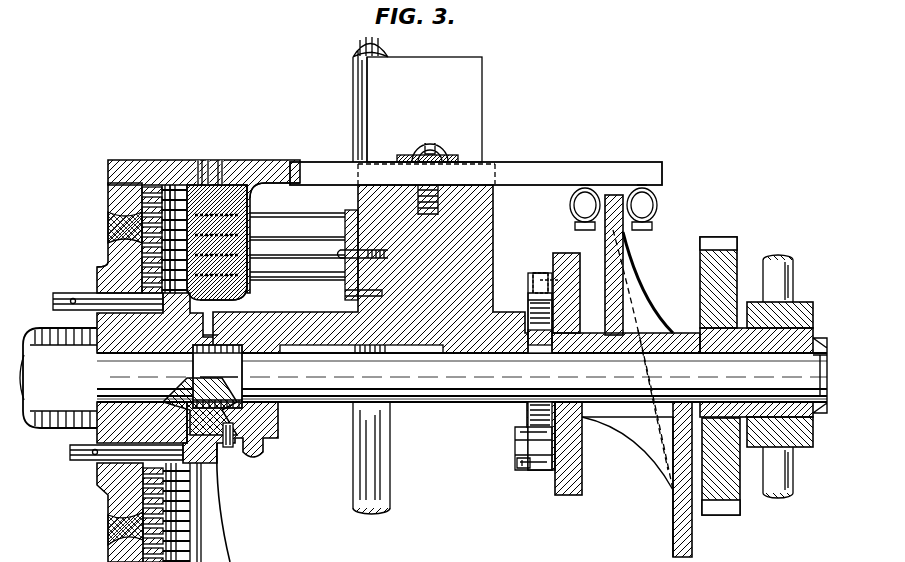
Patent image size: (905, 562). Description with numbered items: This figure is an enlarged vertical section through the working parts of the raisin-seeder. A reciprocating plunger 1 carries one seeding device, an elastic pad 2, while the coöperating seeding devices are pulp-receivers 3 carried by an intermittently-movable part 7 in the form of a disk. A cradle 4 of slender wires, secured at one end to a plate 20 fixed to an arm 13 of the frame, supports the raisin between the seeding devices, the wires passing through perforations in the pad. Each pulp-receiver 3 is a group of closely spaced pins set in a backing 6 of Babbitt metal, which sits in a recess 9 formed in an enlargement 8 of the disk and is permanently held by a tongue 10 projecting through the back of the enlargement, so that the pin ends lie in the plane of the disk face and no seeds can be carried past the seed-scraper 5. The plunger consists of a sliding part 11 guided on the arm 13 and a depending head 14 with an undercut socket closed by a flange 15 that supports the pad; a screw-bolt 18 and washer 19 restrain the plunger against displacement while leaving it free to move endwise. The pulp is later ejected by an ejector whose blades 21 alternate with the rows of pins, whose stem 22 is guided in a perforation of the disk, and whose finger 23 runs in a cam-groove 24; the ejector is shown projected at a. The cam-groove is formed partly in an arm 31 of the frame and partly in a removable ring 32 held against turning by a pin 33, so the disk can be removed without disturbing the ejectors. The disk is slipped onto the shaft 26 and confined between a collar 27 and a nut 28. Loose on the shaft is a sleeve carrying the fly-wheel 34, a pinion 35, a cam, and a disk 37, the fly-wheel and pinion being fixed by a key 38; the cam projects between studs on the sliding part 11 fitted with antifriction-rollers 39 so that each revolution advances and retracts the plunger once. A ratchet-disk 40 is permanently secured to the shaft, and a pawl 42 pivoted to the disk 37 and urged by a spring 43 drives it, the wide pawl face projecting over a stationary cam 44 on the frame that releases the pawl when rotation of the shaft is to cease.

The reciprocating plunger 1 is at (252, 180).
The elastic pad 2 is at (198, 183).
The pulp-receiver 3 is at (170, 185).
The cradle 4 is at (297, 246).
The seed-scraper 5 is at (358, 266).
The backing 6 is at (135, 183).
The intermittently-movable part (disk) 7 is at (100, 268).
The enlargement 8 is at (100, 480).
The recess 9 is at (180, 185).
The tongue 10 is at (112, 222).
The sliding part 11 is at (512, 170).
The arm 13 is at (398, 269).
The depending head 14 is at (255, 203).
The flange 15 is at (225, 300).
The screw-bolt 18 is at (438, 155).
The washer 19 is at (462, 160).
The plate 20 is at (348, 226).
The blades or teeth 21 is at (150, 185).
The stem 22 is at (80, 298).
The finger 23 is at (228, 460).
The cam-groove 24 is at (232, 447).
The shaft 26 is at (462, 377).
The shoulder or collar 27 is at (202, 390).
The nut 28 is at (58, 378).
The arm of the frame 31 is at (262, 425).
The removable ring 32 is at (245, 558).
The pin 33 is at (218, 335).
The fly-wheel 34 is at (778, 495).
The pinion 35 is at (728, 505).
The disk 37 is at (572, 495).
The key 38 is at (700, 328).
The antifriction-rollers 39 is at (590, 198).
The ratchet-disk 40 is at (518, 440).
The pawl 42 is at (517, 468).
The spring 43 is at (540, 273).
The stationary cam 44 is at (510, 312).
The projected position of ejector a is at (205, 512).